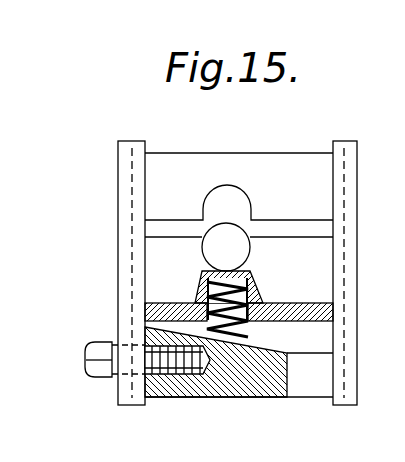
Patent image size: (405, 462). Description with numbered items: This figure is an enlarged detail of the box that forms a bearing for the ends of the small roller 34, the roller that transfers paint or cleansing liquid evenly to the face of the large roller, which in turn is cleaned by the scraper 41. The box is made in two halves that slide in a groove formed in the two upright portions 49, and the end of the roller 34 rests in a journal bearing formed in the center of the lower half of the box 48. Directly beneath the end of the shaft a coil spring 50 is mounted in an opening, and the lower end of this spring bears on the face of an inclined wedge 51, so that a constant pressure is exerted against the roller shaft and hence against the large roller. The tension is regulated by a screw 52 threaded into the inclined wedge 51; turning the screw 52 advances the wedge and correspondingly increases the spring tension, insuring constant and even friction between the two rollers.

The small roller 34 is at (201, 248).
The scraper 41 is at (240, 160).
The lower half of the box 48 is at (307, 260).
The upright portions 49 is at (120, 193).
The coil spring 50 is at (143, 308).
The inclined wedge 51 is at (235, 393).
The screw 52 is at (87, 358).